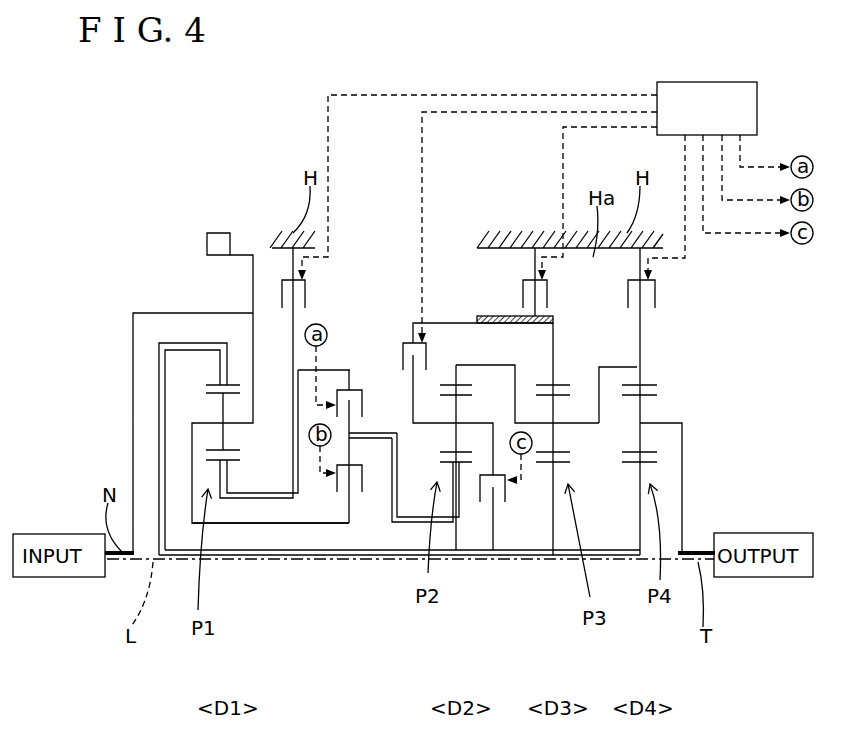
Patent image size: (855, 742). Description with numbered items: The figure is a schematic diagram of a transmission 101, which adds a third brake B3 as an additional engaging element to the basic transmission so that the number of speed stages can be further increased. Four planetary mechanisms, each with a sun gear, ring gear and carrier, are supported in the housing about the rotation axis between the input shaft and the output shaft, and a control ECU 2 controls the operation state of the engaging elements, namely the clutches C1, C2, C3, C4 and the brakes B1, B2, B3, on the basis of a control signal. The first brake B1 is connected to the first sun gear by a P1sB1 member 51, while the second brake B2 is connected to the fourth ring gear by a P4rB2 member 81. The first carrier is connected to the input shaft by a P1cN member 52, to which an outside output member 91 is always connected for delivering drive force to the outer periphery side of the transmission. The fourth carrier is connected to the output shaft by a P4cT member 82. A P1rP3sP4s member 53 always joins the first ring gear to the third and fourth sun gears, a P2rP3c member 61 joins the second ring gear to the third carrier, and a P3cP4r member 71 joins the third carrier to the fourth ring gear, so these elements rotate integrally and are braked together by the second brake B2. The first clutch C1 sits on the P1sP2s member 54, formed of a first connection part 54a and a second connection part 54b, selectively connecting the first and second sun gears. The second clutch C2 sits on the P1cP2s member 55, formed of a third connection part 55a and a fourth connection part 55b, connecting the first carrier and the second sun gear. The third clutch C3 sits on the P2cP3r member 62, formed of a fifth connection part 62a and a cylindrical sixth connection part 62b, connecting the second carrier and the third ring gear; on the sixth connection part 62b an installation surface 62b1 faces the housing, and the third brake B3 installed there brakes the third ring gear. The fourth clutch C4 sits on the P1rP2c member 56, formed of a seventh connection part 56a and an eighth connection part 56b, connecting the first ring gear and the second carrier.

The control ECU 2 is at (757, 108).
The transmission 101 is at (163, 188).
The P1sB1 member 51 is at (293, 330).
The P1cN member 52 is at (133, 402).
The P1rP3sP4s member 53 is at (610, 560).
The P1sP2s member 54 is at (413, 260).
The first connection part 54a is at (332, 370).
The second connection part 54b is at (373, 433).
The P1cP2s member 55 is at (415, 652).
The third connection part 55a is at (333, 523).
The fourth connection part 55b is at (390, 503).
The P1rP2c member 56 is at (545, 652).
The seventh connection part 56a is at (493, 518).
The eighth connection part 56b is at (490, 457).
The P2rP3c member 61 is at (515, 380).
The P2cP3r member 62 is at (520, 185).
The fifth connection part 62a is at (413, 380).
The sixth connection part 62b is at (552, 333).
The installation surface 62b1 is at (550, 318).
The P3cP4r member 71 is at (623, 360).
The P4rB2 member 81 is at (642, 338).
The P4cT member 82 is at (682, 457).
The outside output member 91 is at (243, 250).
The first brake B1 is at (283, 295).
The second brake B2 is at (655, 297).
The third brake B3 is at (527, 280).
The first clutch C1 is at (355, 388).
The second clutch C2 is at (335, 483).
The third clutch C3 is at (425, 360).
The fourth clutch C4 is at (507, 495).